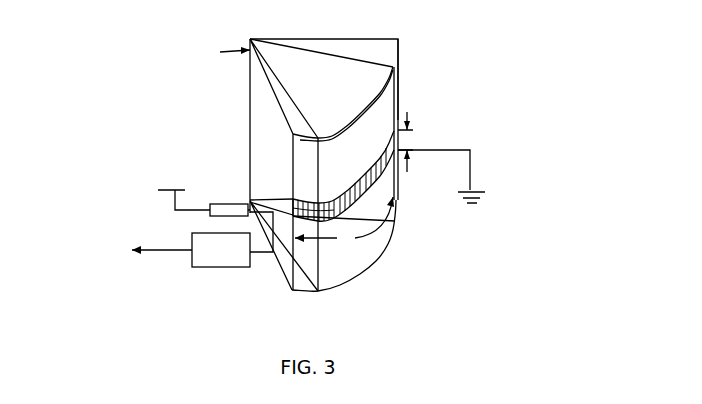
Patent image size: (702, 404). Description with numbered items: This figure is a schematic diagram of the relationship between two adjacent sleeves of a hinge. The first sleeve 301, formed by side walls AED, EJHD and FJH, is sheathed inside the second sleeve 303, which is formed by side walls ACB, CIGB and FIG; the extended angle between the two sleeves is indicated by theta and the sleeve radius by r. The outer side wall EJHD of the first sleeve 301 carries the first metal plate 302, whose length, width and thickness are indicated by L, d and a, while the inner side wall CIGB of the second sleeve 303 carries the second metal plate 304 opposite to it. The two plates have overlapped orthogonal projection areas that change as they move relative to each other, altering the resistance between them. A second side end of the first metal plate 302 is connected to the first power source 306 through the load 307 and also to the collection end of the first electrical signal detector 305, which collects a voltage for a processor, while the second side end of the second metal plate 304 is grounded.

The first sleeve 301 is at (272, 107).
The first metal plate 302 is at (293, 198).
The second sleeve 303 is at (397, 62).
The second metal plate 304 is at (398, 145).
The first electrical signal detector 305 is at (212, 272).
The first power source 306 is at (143, 197).
The load 307 is at (207, 218).